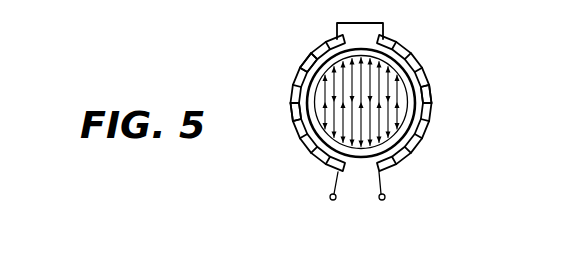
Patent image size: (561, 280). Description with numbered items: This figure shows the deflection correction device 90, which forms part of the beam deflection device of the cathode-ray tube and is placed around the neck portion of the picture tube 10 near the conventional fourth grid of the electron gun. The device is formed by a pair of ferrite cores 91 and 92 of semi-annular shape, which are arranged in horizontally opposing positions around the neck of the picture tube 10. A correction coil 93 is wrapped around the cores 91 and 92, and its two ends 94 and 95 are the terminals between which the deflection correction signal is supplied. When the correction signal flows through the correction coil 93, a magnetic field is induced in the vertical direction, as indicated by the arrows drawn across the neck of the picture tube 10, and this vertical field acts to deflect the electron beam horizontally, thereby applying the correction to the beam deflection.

The picture tube 10 is at (362, 157).
The deflection correction device 90 is at (304, 186).
The ferrite core 91 is at (295, 117).
The ferrite core 92 is at (428, 104).
The correction coil 93 is at (295, 78).
The end of correction coil 94 is at (323, 197).
The end of correction coil 95 is at (384, 199).